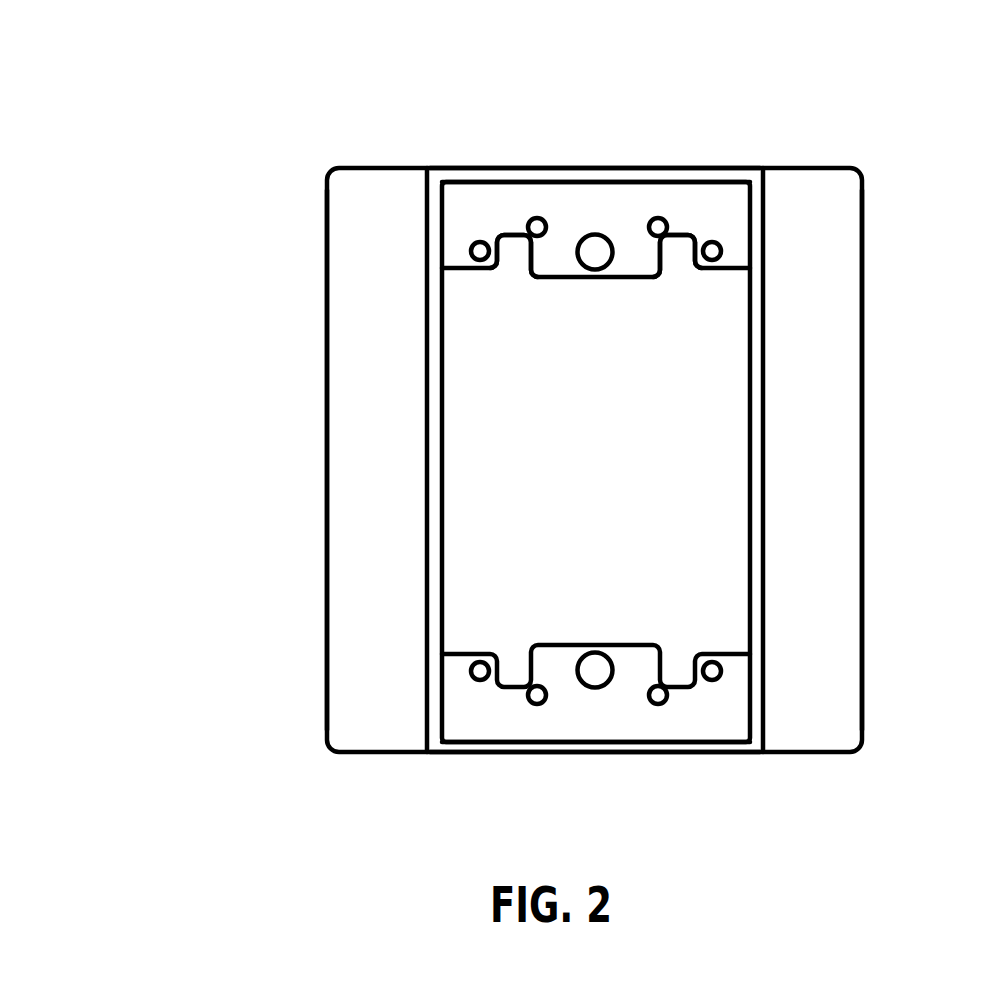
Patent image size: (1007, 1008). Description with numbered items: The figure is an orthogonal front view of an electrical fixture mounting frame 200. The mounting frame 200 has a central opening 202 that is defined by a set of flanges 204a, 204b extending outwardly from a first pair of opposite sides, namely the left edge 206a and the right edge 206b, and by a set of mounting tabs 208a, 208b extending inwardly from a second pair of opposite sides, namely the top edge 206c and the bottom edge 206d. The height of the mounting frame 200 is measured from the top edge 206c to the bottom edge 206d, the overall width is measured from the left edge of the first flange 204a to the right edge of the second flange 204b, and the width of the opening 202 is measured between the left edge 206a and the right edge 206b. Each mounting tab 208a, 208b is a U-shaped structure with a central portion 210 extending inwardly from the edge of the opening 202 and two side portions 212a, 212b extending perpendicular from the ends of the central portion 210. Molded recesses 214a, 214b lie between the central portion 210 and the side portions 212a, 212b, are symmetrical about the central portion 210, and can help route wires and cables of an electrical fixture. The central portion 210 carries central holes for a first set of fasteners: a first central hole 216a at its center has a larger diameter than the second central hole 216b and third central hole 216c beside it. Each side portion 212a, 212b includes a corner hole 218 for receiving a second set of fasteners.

The electrical fixture mounting frame 200 is at (331, 78).
The opening 202 is at (663, 419).
The first flange 204a is at (350, 167).
The second flange 204b is at (825, 185).
The left edge 206a is at (427, 515).
The right edge 206b is at (752, 493).
The top edge 206c is at (450, 167).
The bottom edge 206d is at (708, 753).
The mounting tab 208a is at (708, 188).
The mounting tab 208b is at (598, 742).
The central portion 210 is at (609, 648).
The side portion 212a is at (497, 650).
The side portion 212b is at (707, 650).
The recess 214a is at (507, 248).
The recess 214b is at (678, 248).
The first central hole 216a is at (600, 248).
The second central hole 216b is at (537, 217).
The third central hole 216c is at (658, 217).
The corner hole 218 is at (468, 254).